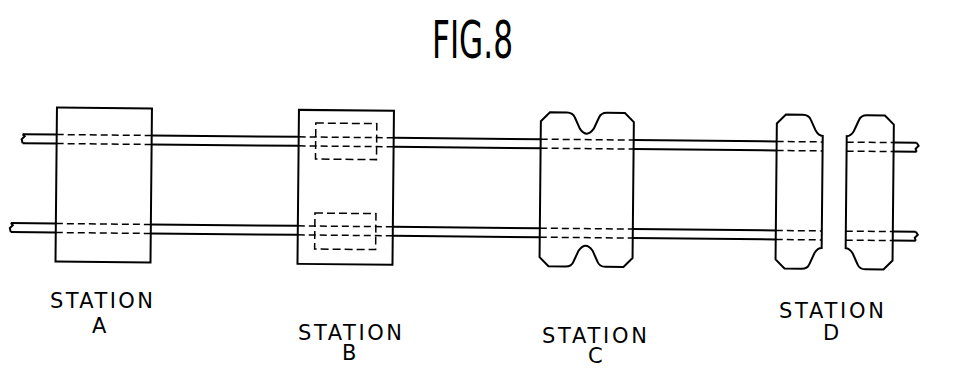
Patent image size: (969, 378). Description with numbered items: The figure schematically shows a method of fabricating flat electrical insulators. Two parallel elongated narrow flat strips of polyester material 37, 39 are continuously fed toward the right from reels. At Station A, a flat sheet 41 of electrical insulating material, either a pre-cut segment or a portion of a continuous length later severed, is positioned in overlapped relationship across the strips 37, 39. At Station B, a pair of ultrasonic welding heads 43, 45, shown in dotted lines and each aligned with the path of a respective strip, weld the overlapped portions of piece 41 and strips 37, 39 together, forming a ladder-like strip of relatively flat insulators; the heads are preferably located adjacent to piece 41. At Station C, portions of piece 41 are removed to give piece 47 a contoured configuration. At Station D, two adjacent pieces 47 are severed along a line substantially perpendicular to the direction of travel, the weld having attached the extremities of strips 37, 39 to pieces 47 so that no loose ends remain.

The narrow flat strip of polyester material 37 is at (33, 132).
The narrow flat strip of polyester material 39 is at (35, 236).
The flat sheet of polyester material 41 is at (105, 111).
The ultrasonic welding head 43 is at (355, 128).
The ultrasonic welding head 45 is at (356, 238).
The contoured piece 47 is at (621, 252).